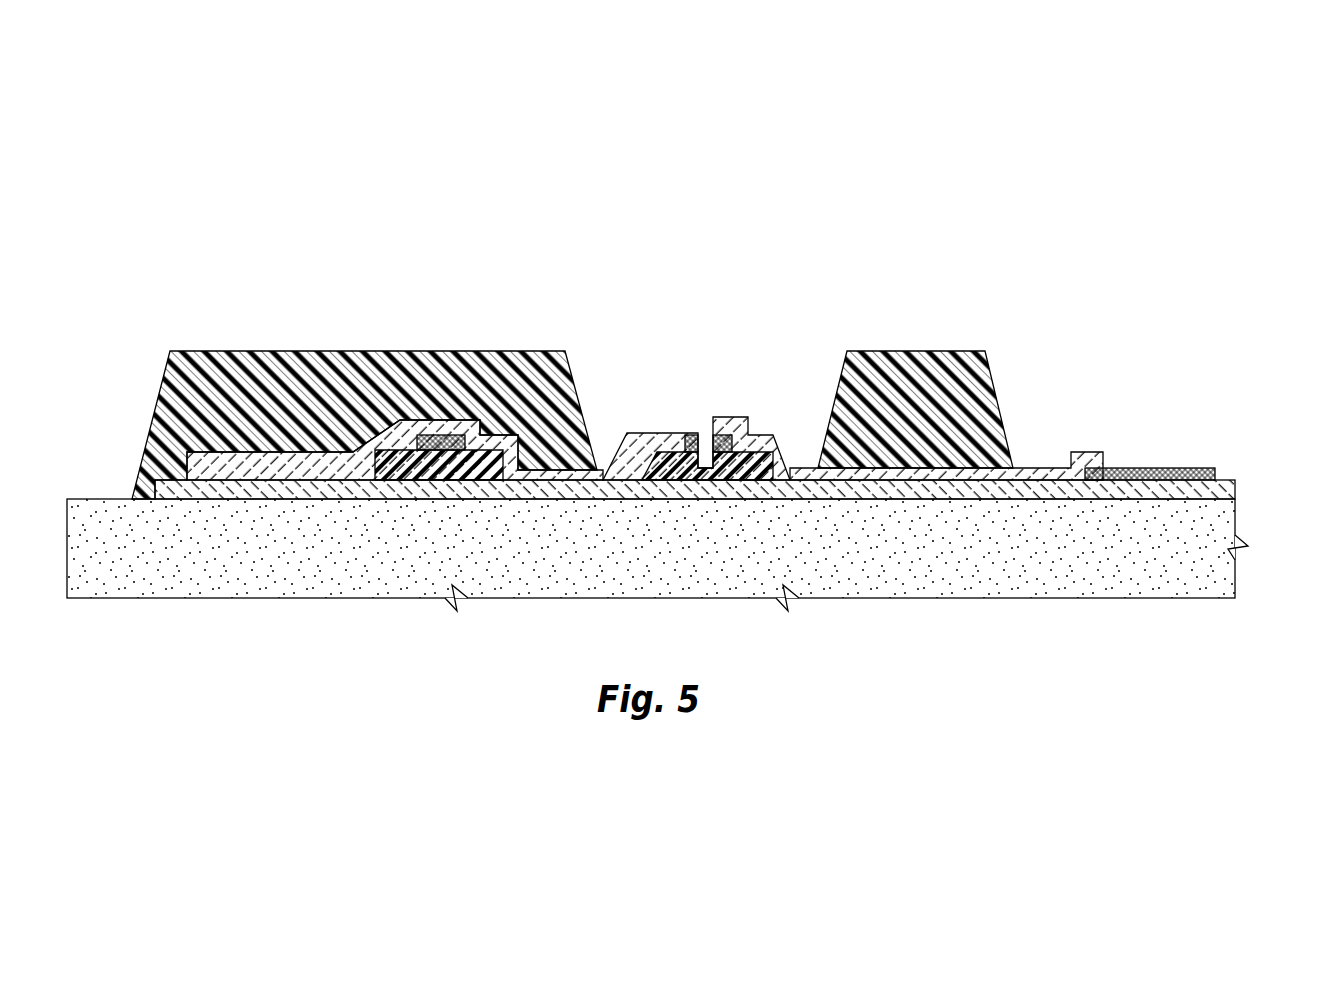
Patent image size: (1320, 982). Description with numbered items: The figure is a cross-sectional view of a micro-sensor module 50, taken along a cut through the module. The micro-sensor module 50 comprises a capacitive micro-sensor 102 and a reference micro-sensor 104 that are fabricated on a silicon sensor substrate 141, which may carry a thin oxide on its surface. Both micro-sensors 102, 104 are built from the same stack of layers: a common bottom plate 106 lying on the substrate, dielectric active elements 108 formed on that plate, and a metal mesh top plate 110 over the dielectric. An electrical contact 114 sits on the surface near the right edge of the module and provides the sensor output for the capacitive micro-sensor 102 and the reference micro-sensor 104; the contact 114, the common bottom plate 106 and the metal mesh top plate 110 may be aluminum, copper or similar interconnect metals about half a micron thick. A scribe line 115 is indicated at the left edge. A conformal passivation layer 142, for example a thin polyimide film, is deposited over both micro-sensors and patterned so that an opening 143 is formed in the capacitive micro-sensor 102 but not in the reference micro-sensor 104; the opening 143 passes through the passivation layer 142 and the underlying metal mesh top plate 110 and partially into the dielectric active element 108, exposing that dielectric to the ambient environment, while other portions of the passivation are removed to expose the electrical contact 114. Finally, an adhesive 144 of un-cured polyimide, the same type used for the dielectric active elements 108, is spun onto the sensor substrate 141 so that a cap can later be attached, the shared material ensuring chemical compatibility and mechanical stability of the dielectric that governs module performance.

The micro-sensor module 50 is at (862, 136).
The capacitive micro-sensor 102 is at (692, 311).
The reference micro-sensor 104 is at (434, 289).
The common bottom plate 106 is at (1218, 488).
The dielectric active element 108 is at (648, 462).
The metal mesh top plate 110 is at (468, 436).
The electrical contact 114 is at (1137, 472).
The scribe line 115 is at (100, 497).
The sensor substrate 141 is at (1200, 583).
The conformal passivation layer 142 is at (523, 462).
The opening 143 is at (702, 416).
The adhesive 144 is at (553, 373).